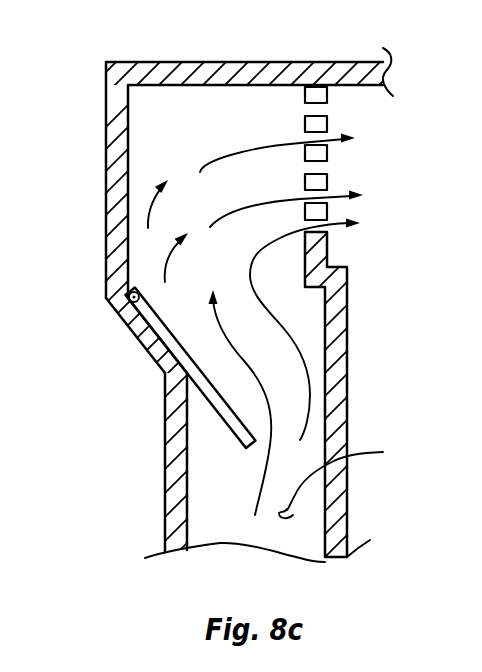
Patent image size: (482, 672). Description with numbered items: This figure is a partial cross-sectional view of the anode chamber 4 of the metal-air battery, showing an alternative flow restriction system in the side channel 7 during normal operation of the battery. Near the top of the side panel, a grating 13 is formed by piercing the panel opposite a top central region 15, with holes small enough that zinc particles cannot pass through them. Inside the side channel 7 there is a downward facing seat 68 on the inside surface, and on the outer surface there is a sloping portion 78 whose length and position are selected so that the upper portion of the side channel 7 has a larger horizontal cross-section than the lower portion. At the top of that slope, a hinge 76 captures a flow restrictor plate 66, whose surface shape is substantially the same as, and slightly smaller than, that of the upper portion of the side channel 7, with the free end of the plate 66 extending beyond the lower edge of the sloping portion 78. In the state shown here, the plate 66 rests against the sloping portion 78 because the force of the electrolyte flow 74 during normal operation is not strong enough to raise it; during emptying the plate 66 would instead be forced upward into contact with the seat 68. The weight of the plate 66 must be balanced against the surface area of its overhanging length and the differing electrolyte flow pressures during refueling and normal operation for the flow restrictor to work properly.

The anode chamber 4 is at (60, 150).
The side channel 7 is at (341, 479).
The grating 13 is at (327, 108).
The top central region 15 is at (429, 188).
The flow restrictor plate 66 is at (165, 455).
The downward facing seat 68 is at (300, 355).
The flow of the electrolyte 74 is at (313, 290).
The hinge 76 is at (127, 298).
The sloping portion 78 is at (133, 332).